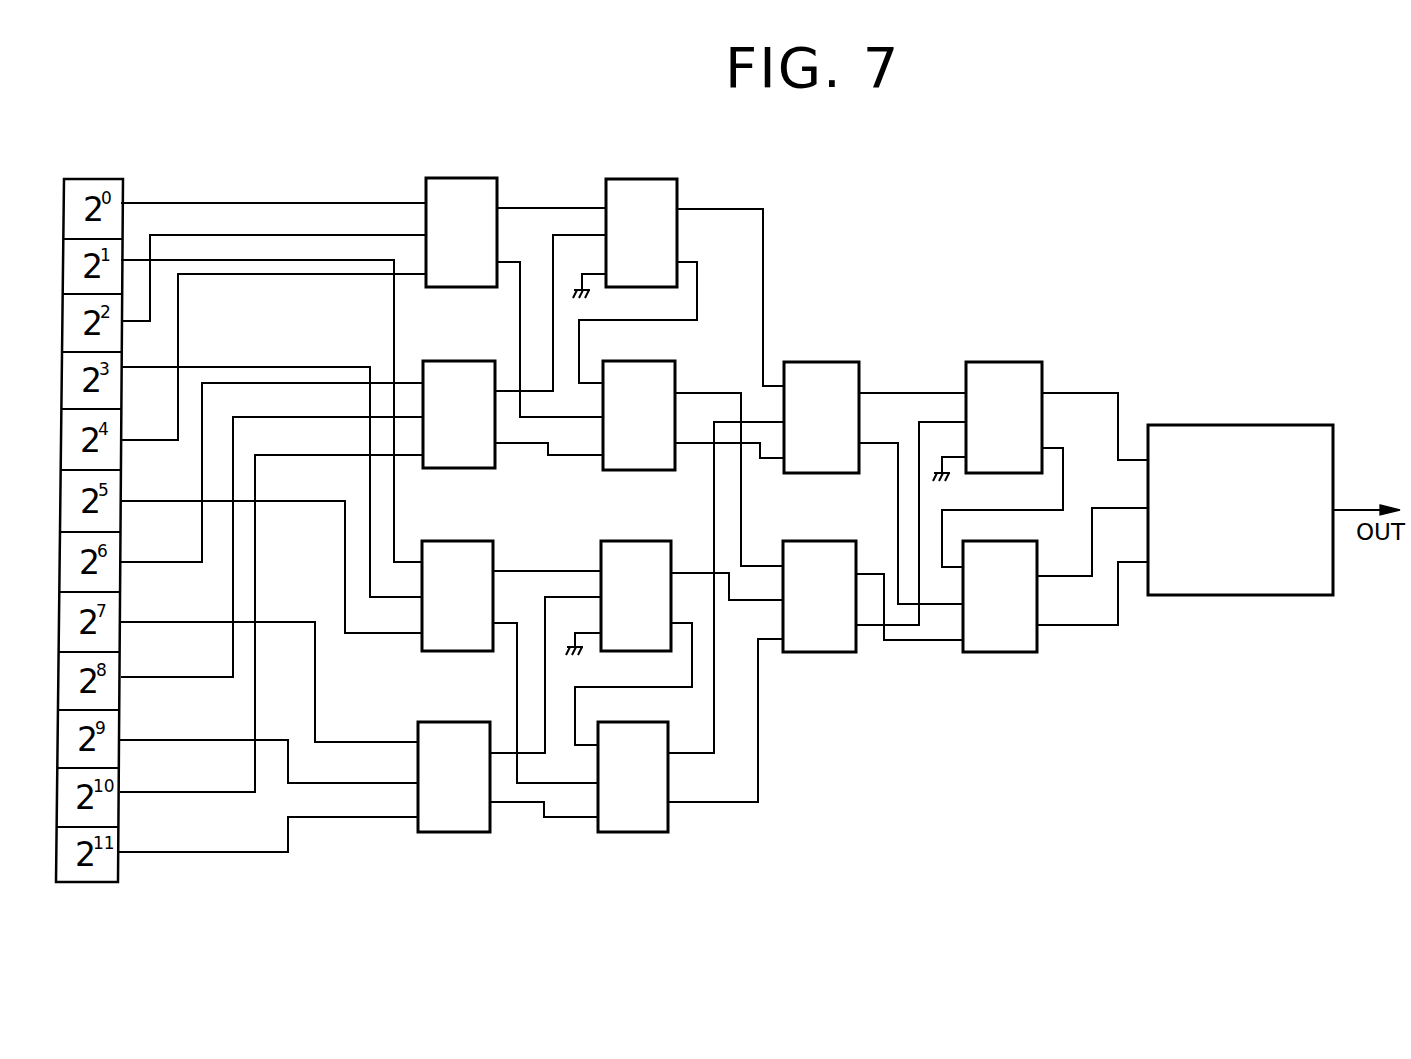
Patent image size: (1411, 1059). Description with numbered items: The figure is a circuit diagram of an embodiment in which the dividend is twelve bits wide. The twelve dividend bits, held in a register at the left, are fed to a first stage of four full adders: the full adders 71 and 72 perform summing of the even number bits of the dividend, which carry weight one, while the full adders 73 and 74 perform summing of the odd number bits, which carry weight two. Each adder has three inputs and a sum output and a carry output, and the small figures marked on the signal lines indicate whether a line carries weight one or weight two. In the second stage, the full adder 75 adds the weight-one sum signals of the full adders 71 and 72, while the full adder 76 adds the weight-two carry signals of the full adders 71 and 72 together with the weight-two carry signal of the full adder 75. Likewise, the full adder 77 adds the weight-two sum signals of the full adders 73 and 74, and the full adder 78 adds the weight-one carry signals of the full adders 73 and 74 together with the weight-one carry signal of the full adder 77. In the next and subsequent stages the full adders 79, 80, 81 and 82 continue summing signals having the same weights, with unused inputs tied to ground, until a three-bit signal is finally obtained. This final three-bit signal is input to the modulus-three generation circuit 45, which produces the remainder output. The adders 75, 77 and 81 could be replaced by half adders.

The full adder 71 is at (465, 178).
The full adder 72 is at (460, 361).
The full adder 73 is at (461, 541).
The full adder 74 is at (458, 722).
The full adder 75 is at (643, 179).
The full adder 76 is at (648, 361).
The full adder 77 is at (641, 541).
The full adder 78 is at (618, 722).
The full adder 79 is at (823, 362).
The full adder 80 is at (825, 541).
The full adder 81 is at (1003, 362).
The full adder 82 is at (1026, 541).
The modulus 3 generation circuit 45 is at (1207, 425).